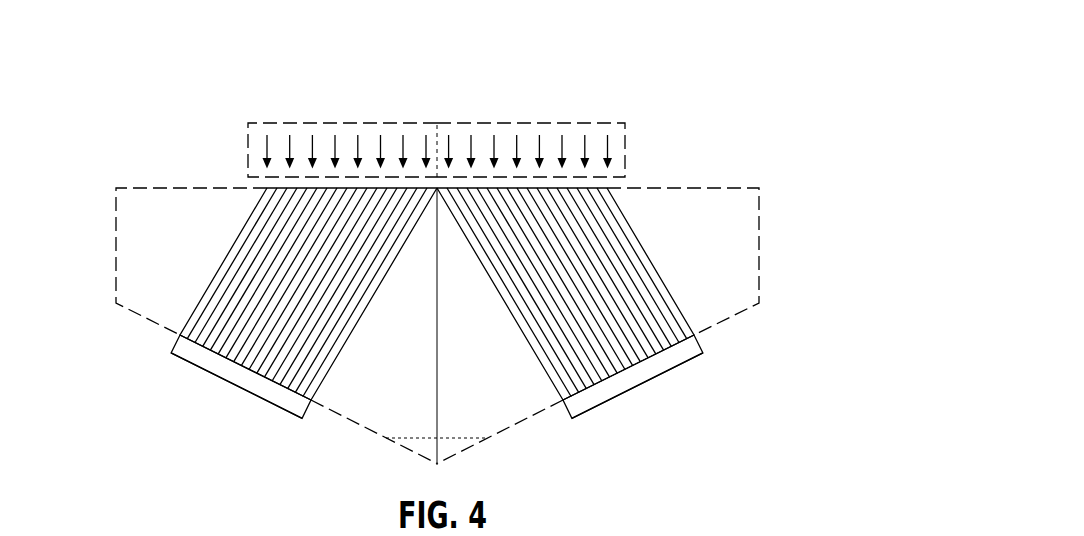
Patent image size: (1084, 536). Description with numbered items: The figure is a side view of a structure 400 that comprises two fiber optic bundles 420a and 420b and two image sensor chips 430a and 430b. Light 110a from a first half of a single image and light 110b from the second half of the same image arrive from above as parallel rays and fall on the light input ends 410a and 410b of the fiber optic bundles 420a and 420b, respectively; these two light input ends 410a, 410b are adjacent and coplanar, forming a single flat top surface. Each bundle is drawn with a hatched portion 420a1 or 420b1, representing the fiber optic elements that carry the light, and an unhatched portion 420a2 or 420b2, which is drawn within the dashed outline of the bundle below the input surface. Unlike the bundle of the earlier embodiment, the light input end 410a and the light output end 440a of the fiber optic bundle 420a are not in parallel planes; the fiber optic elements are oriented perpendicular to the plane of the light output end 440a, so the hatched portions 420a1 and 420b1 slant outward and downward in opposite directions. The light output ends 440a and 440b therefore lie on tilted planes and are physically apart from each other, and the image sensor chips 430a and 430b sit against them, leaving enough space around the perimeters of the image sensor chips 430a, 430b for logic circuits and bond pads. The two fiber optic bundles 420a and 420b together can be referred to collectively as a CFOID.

The structure 400 is at (702, 85).
The light 110a is at (267, 123).
The light 110b is at (607, 123).
The light input end 410a is at (280, 188).
The light input end 410b is at (594, 188).
The fiber optic bundle 420a is at (116, 245).
The fiber optic bundle 420b is at (759, 245).
The first light guide portion 420a1 is at (223, 262).
The second light guide portion 420b1 is at (652, 262).
The first non-guiding region 420a2 is at (420, 368).
The second non-guiding region 420b2 is at (515, 368).
The image sensor chip 430a is at (177, 345).
The image sensor chip 430b is at (697, 345).
The light output end 440a is at (238, 363).
The light output end 440b is at (636, 363).